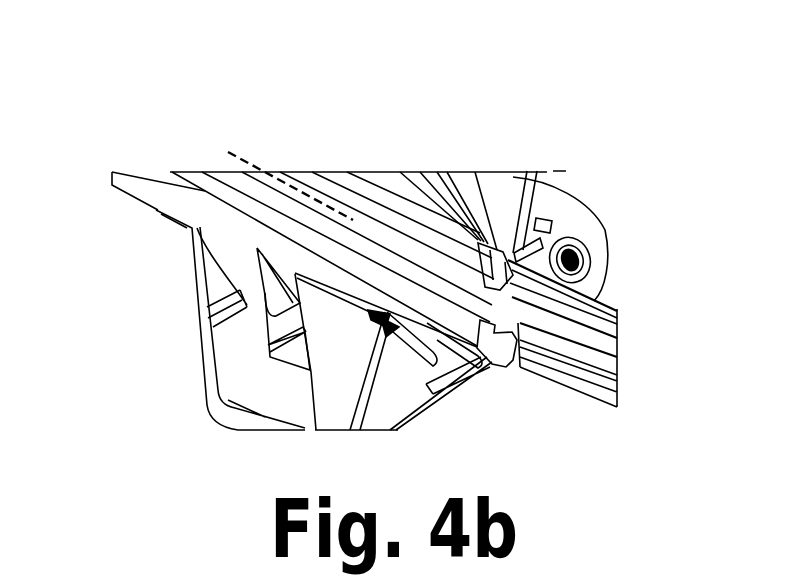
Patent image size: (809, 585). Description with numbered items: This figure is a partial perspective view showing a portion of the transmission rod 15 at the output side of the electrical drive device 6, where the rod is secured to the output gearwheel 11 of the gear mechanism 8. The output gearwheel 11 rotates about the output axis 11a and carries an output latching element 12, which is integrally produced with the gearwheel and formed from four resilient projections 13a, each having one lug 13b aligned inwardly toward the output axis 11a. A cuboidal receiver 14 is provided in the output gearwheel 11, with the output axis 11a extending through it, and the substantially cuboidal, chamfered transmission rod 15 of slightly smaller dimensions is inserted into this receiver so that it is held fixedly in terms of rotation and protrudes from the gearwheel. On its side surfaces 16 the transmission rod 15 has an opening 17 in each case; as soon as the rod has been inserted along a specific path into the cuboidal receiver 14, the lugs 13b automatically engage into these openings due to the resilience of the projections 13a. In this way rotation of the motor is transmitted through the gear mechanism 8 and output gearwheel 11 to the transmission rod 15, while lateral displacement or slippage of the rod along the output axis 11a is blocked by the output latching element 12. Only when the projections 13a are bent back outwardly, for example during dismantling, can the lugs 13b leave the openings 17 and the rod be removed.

The electrical drive device 6 is at (385, 264).
The gear mechanism 8 is at (513, 178).
The output gearwheel 11 is at (232, 374).
The output axis 11a is at (249, 155).
The output latching element 12 is at (369, 189).
The resilient projections 13a is at (453, 237).
The lugs 13b is at (552, 223).
The cuboidal receiver 14 is at (197, 193).
The transmission rod 15 is at (597, 390).
The side surfaces 16 is at (603, 311).
The opening 17 is at (522, 337).